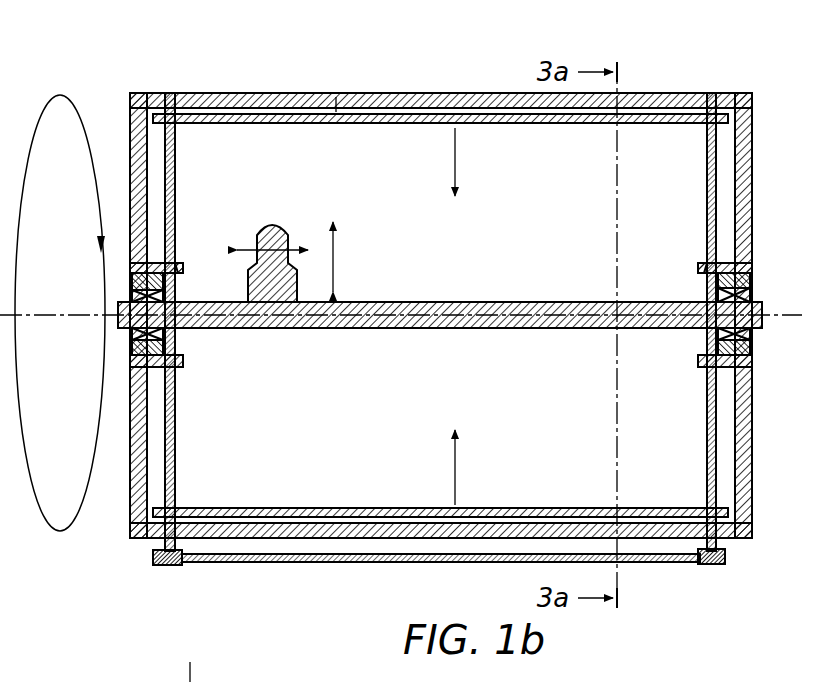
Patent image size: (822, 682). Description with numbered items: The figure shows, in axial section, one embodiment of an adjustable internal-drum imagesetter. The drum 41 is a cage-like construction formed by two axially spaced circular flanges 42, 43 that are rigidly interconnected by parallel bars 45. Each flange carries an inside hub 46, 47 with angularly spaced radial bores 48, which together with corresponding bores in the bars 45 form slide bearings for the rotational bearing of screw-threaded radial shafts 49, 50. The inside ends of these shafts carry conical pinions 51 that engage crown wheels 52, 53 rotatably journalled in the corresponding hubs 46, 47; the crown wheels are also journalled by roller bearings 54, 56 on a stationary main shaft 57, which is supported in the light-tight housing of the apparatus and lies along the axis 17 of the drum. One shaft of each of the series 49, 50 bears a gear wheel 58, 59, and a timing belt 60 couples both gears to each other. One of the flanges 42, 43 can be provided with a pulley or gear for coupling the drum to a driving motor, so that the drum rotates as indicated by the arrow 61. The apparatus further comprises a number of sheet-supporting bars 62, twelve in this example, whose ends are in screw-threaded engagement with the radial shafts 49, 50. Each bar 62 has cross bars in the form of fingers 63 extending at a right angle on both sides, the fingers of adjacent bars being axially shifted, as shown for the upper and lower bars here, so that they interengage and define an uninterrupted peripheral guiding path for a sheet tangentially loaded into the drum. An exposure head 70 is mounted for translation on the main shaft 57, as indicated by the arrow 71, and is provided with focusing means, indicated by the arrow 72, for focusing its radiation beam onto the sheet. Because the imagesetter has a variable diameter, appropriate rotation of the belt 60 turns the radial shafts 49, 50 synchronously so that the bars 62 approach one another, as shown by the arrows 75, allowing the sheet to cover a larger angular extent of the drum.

The axis 17 is at (88, 316).
The drum 41 is at (367, 88).
The circular flange 42 is at (130, 153).
The circular flange 43 is at (752, 188).
The parallel bars 45 is at (447, 93).
The inside hub 46 is at (130, 198).
The inside hub 47 is at (735, 263).
The radial bores 48 is at (178, 263).
The screw-threaded radial shaft 49 is at (173, 157).
The screw-threaded radial shaft 50 is at (708, 157).
The conical pinion 51 is at (180, 280).
The crown wheel 52 is at (130, 360).
The crown wheel 53 is at (743, 343).
The roller bearing 54 is at (116, 315).
The roller bearing 56 is at (745, 295).
The main shaft 57 is at (488, 316).
The gear wheel 58 is at (178, 567).
The gear wheel 59 is at (716, 568).
The timing belt 60 is at (416, 563).
The arrow 61 is at (69, 95).
The sheet-supporting bar 62 is at (503, 113).
The fingers 63 is at (277, 95).
The exposure head 70 is at (278, 218).
The arrow 71 is at (289, 230).
The arrow 72 is at (345, 252).
The arrows 75 is at (417, 247).